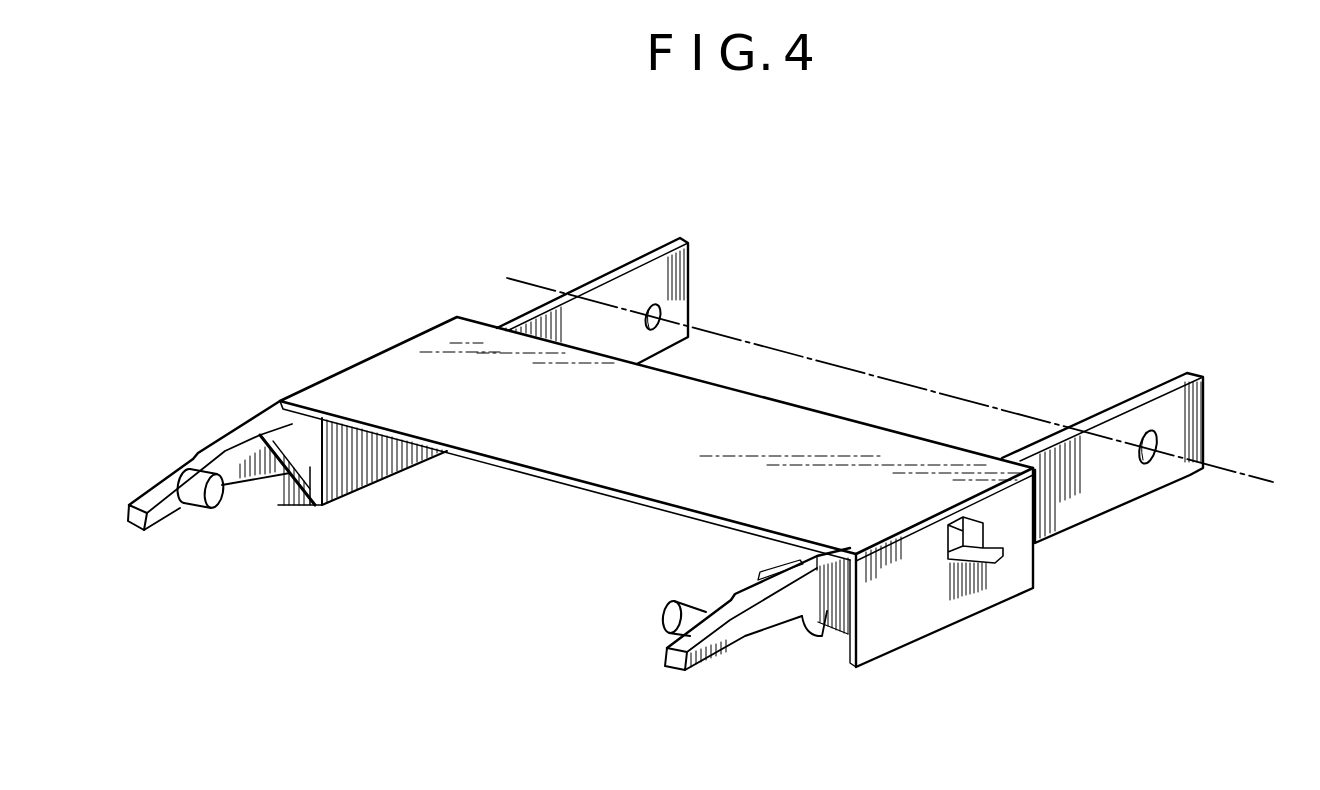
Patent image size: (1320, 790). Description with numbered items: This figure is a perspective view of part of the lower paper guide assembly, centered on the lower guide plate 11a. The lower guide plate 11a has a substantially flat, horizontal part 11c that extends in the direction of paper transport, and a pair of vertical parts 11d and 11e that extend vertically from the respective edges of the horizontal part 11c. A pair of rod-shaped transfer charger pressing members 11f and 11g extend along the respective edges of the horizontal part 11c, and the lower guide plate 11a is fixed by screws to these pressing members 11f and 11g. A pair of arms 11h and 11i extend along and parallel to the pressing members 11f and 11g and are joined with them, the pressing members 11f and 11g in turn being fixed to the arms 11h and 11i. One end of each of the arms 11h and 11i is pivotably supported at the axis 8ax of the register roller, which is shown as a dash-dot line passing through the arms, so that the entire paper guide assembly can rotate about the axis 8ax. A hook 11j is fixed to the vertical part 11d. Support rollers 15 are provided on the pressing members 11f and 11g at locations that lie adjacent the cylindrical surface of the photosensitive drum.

The lower guide plate 11a is at (723, 444).
The horizontal part 11c is at (759, 400).
The vertical part 11d is at (945, 618).
The vertical part 11e is at (280, 401).
The transfer charger pressing member 11f is at (743, 632).
The transfer charger pressing member 11g is at (172, 475).
The arm 11h is at (1196, 372).
The arm 11i is at (621, 270).
The hook 11j is at (998, 557).
The support roller 15 is at (222, 500).
The axis of the register roller 8ax is at (1262, 477).